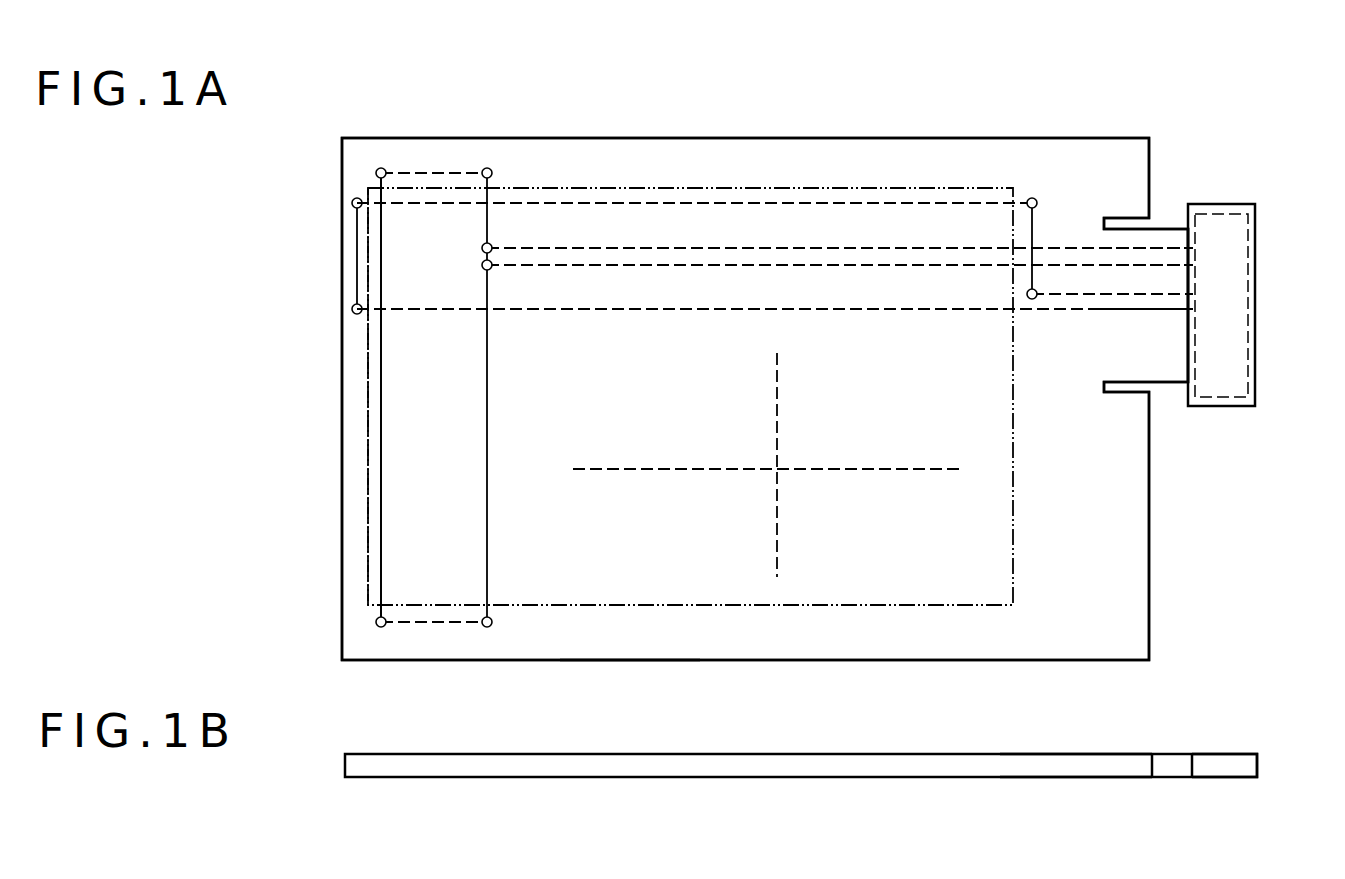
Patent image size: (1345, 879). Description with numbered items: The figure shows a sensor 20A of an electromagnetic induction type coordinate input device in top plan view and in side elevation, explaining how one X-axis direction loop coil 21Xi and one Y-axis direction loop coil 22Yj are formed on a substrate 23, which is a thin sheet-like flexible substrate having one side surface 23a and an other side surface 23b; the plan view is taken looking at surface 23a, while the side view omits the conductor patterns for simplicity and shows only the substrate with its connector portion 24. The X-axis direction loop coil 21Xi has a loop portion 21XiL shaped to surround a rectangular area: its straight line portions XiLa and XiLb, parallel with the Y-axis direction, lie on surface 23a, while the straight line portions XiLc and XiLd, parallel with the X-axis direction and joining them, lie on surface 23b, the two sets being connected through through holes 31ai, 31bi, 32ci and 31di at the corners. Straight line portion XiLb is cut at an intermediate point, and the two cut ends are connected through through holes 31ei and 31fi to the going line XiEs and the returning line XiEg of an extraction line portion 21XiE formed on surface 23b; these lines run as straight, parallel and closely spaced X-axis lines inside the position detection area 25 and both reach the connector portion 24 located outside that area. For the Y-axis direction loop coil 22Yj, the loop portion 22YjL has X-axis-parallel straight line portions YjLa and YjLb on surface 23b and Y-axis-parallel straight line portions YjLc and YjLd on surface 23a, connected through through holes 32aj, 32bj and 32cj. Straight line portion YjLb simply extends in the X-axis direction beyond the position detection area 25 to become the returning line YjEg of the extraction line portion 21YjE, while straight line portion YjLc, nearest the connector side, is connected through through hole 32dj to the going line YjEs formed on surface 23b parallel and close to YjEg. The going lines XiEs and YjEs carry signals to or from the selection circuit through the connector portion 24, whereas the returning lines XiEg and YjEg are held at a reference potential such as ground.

In FIG. 1A, the sensor 20A is at (353, 72).
In FIG. 1A, the substrate 23 is at (1067, 630).
In FIG. 1B, the substrate 23 is at (345, 768).
In FIG. 1A, the one side surface 23a is at (618, 630).
In FIG. 1B, the one side surface 23a is at (1130, 752).
In FIG. 1B, the other side surface 23b is at (1130, 778).
In FIG. 1A, the connector portion 24 is at (1218, 203).
In FIG. 1B, the connector portion 24 is at (1225, 778).
In FIG. 1A, the position detection area 25 is at (668, 186).
In FIG. 1A, the X-axis direction loop coil 21Xi is at (378, 553).
In FIG. 1A, the loop portion 21XiL is at (380, 500).
In FIG. 1A, the straight line portion XiLa is at (380, 404).
In FIG. 1A, the straight line portion XiLb is at (486, 362).
In FIG. 1A, the straight line portion XiLc is at (430, 170).
In FIG. 1A, the straight line portion XiLd is at (424, 625).
In FIG. 1A, the through hole 31ai is at (380, 168).
In FIG. 1A, the through hole 31bi is at (486, 168).
In FIG. 1A, the through hole 31di is at (488, 628).
In FIG. 1A, the through hole 31ei is at (491, 246).
In FIG. 1A, the through hole 31fi is at (491, 263).
In FIG. 1A, the through hole 32ci is at (376, 622).
In FIG. 1A, the Y-axis direction loop coil 22Yj is at (895, 199).
In FIG. 1A, the loop portion 22YjL is at (730, 200).
In FIG. 1A, the straight line portion YjLa is at (804, 200).
In FIG. 1A, the straight line portion YjLb is at (867, 306).
In FIG. 1A, the straight line portion YjLc is at (1030, 240).
In FIG. 1A, the straight line portion YjLd is at (356, 262).
In FIG. 1A, the through hole 32aj is at (1034, 197).
In FIG. 1A, the through hole 32bj is at (352, 203).
In FIG. 1A, the through hole 32cj is at (352, 309).
In FIG. 1A, the through hole 32dj is at (1027, 291).
In FIG. 1A, the going line XiEs is at (1063, 263).
In FIG. 1A, the returning line XiEg is at (1083, 247).
In FIG. 1A, the extraction line portion 21XiE is at (1160, 68).
In FIG. 1A, the going line YjEs is at (1143, 296).
In FIG. 1A, the returning line YjEg is at (1108, 311).
In FIG. 1A, the extraction line portion 21YjE is at (1222, 420).